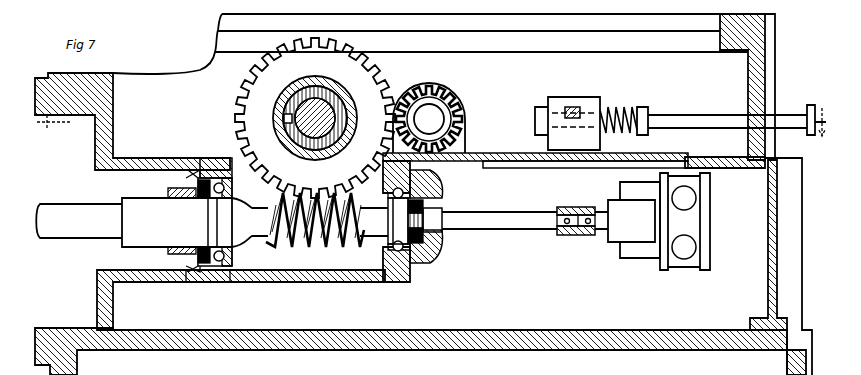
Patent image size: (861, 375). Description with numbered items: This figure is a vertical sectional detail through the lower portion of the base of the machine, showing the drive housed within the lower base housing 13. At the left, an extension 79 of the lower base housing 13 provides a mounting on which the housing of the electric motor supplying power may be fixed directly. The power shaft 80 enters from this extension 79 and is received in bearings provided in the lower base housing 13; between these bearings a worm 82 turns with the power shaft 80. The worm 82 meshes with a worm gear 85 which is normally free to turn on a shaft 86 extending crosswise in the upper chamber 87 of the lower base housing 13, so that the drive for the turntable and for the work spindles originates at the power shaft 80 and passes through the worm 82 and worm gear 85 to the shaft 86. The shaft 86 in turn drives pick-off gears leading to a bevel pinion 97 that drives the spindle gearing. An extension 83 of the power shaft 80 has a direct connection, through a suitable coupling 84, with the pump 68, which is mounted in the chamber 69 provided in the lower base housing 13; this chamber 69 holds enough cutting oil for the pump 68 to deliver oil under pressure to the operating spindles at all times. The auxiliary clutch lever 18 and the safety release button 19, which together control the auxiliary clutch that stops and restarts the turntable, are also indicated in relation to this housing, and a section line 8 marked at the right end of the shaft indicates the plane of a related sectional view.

The extension of the lower base housing 79 is at (72, 80).
The auxiliary clutch lever 18 is at (54, 127).
The lower base housing 13 is at (760, 35).
The upper chamber 87 is at (740, 82).
The safety release button 19 is at (810, 110).
The section line 8 is at (818, 130).
The worm gear 85 is at (375, 90).
The shaft 86 is at (300, 157).
The bevel pinion 97 is at (463, 115).
The power shaft 80 is at (53, 236).
The worm 82 is at (320, 245).
The extension of the shaft 83 is at (512, 229).
The coupling 84 is at (585, 236).
The pump 68 is at (636, 258).
The chamber 69 is at (687, 322).